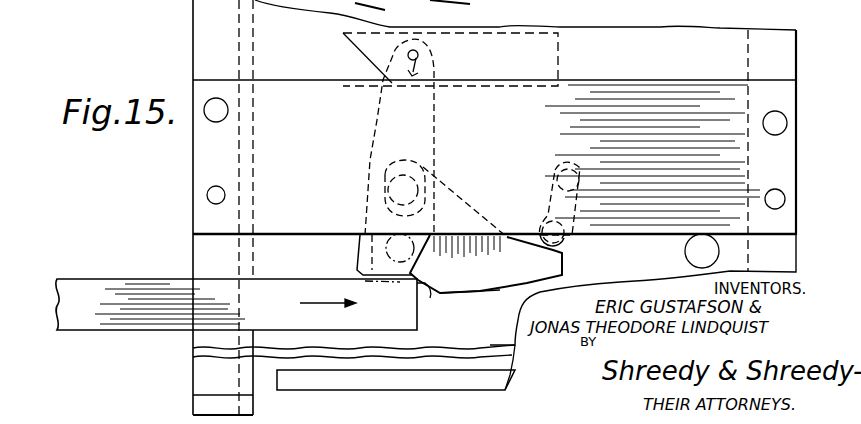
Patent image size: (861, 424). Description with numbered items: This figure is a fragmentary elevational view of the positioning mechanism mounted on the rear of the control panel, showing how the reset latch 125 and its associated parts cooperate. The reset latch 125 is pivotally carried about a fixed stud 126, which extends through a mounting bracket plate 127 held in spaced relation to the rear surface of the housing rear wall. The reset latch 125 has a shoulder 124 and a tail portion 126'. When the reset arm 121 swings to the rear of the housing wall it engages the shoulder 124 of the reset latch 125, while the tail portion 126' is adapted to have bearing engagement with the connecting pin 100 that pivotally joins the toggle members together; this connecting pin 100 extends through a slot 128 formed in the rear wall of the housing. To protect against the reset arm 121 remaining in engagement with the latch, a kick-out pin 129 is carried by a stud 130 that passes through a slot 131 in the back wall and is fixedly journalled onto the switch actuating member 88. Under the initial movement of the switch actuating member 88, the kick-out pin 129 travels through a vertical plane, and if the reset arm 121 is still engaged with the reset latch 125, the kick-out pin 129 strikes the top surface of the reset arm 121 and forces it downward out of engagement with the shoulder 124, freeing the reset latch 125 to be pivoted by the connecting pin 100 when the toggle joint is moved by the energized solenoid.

The switch actuating member 88 is at (362, 47).
The stud 130 is at (421, 52).
The slot 131 is at (419, 72).
The mounting bracket plate 127 is at (655, 85).
The kick-out pin 129 is at (437, 146).
The fixed stud 126 is at (375, 221).
The slot 128 is at (580, 210).
The connecting pin 100 is at (562, 240).
The tail portion 126' is at (512, 264).
The reset arm 121 is at (275, 287).
The shoulder 124 is at (430, 298).
The reset latch 125 is at (495, 288).